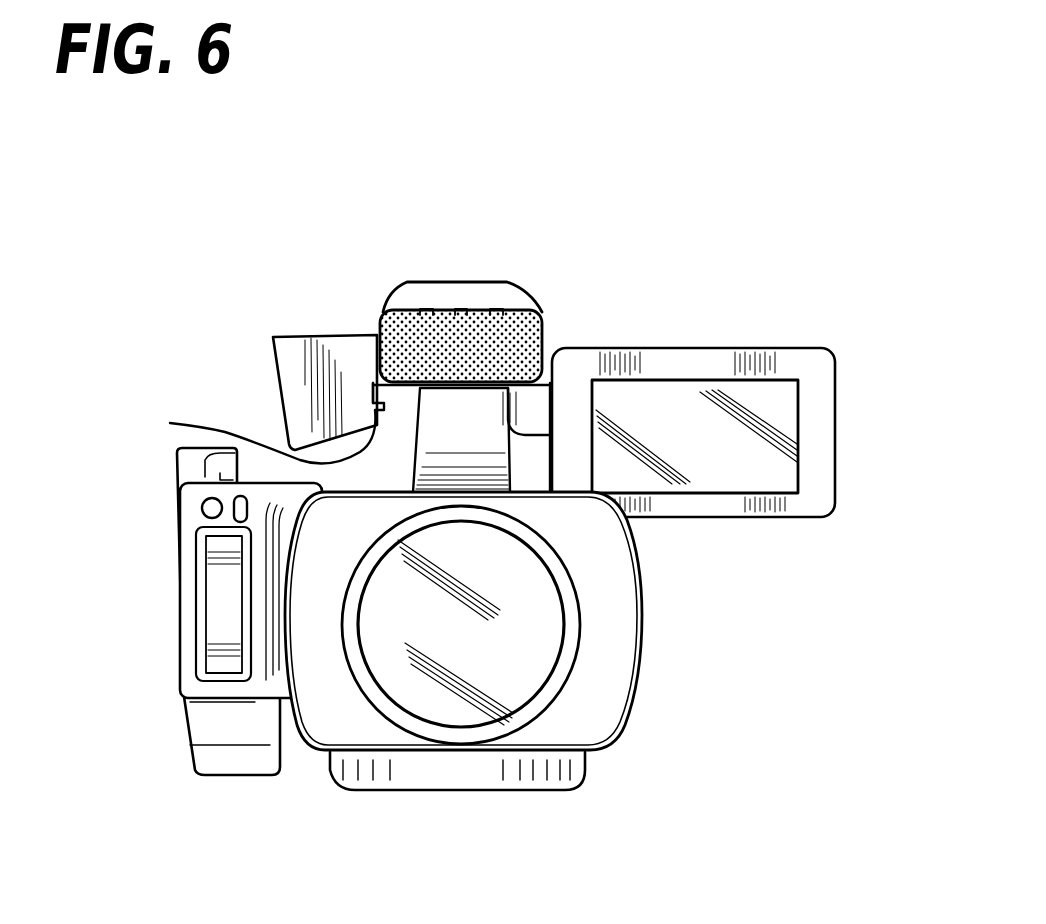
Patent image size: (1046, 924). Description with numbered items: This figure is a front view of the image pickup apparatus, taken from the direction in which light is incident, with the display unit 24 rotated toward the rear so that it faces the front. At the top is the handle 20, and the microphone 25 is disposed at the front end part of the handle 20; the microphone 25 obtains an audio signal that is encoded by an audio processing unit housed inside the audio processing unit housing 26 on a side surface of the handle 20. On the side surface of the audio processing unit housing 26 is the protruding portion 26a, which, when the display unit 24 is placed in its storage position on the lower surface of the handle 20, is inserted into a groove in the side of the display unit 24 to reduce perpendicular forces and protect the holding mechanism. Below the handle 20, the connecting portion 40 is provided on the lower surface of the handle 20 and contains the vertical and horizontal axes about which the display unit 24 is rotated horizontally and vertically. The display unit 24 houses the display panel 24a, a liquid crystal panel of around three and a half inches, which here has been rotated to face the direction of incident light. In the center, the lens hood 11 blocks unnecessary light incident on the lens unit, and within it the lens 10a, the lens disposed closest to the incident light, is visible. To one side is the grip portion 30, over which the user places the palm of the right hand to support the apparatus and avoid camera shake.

The lens 10a is at (503, 685).
The lens hood 11 is at (638, 685).
The handle 20 is at (395, 293).
The display unit 24 is at (833, 375).
The display panel 24a is at (724, 497).
The microphone 25 is at (548, 322).
The audio processing unit housing 26 is at (280, 387).
The protruding portion 26a is at (170, 423).
The grip portion 30 is at (178, 723).
The connecting portion 40 is at (528, 402).